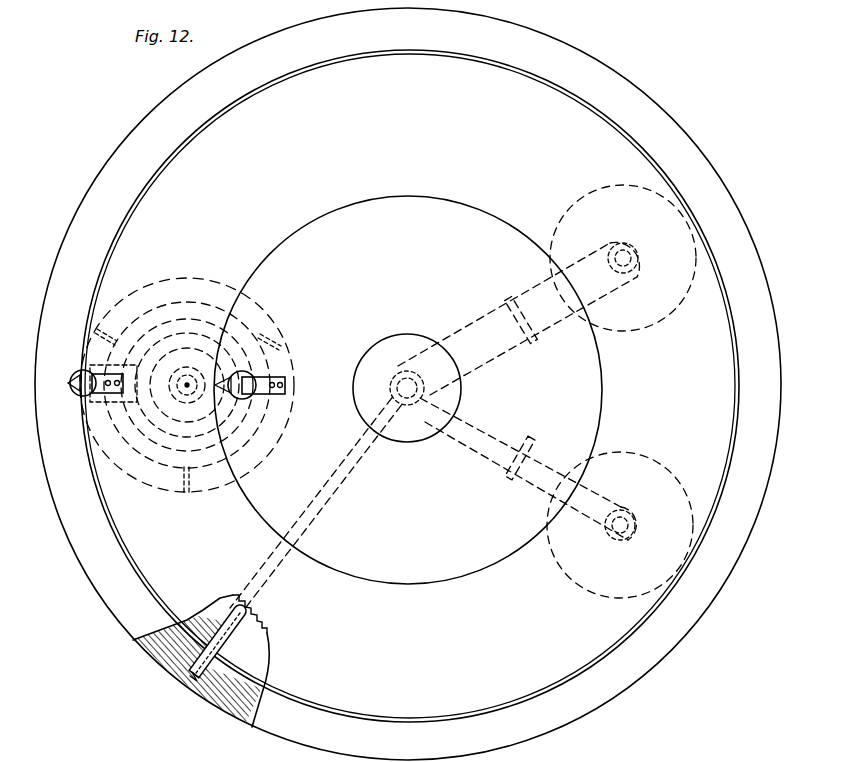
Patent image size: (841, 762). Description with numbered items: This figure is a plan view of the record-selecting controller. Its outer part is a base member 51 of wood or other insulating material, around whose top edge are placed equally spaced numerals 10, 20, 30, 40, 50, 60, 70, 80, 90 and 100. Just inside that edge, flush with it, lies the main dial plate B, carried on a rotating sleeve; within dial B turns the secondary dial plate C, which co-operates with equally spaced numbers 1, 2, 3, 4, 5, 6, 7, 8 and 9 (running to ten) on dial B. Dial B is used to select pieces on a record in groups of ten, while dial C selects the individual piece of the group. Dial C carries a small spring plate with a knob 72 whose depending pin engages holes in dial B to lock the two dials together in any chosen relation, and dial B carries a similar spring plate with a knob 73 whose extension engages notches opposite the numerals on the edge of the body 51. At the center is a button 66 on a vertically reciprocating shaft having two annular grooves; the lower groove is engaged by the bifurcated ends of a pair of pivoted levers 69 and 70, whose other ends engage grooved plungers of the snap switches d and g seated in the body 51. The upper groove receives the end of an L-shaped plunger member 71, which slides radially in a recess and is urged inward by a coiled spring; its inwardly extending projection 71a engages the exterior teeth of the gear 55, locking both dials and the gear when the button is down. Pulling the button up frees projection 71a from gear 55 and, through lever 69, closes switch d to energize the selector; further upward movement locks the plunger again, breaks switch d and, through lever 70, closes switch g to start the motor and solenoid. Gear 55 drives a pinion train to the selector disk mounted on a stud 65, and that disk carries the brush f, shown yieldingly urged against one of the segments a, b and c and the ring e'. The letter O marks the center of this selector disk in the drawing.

The base member 51 is at (676, 157).
The main dial plate B is at (578, 643).
The secondary dial plate C is at (408, 390).
The button 66 is at (407, 352).
The pivoted lever 69 is at (490, 425).
The pivoted lever 70 is at (493, 343).
The L-shaped plunger member 71 is at (340, 488).
The inwardly extending projection 71a is at (231, 632).
The gear 55 is at (267, 617).
The switch g is at (665, 302).
The switch d is at (680, 528).
The left dial center O is at (215, 385).
The stud 65 is at (187, 395).
The brush f is at (188, 410).
The segment c is at (128, 315).
The segment a is at (132, 462).
The segment b is at (285, 412).
The ring e' is at (78, 438).
The knob 72 is at (246, 382).
The numeral 100 is at (83, 383).
The knob 73 is at (82, 375).
The numeral 10 is at (157, 198).
The numeral 20 is at (313, 82).
The numeral 30 is at (507, 82).
The numeral 40 is at (663, 198).
The numeral 50 is at (723, 386).
The numeral 60 is at (663, 574).
The numeral 80 is at (313, 690).
The numeral 90 is at (157, 574).
The number 1 is at (251, 276).
The number 2 is at (348, 206).
The number 3 is at (468, 206).
The number 4 is at (565, 276).
The number 5 is at (602, 390).
The number 6 is at (565, 504).
The number 7 is at (468, 574).
The number 8 is at (348, 574).
The number 9 is at (251, 504).